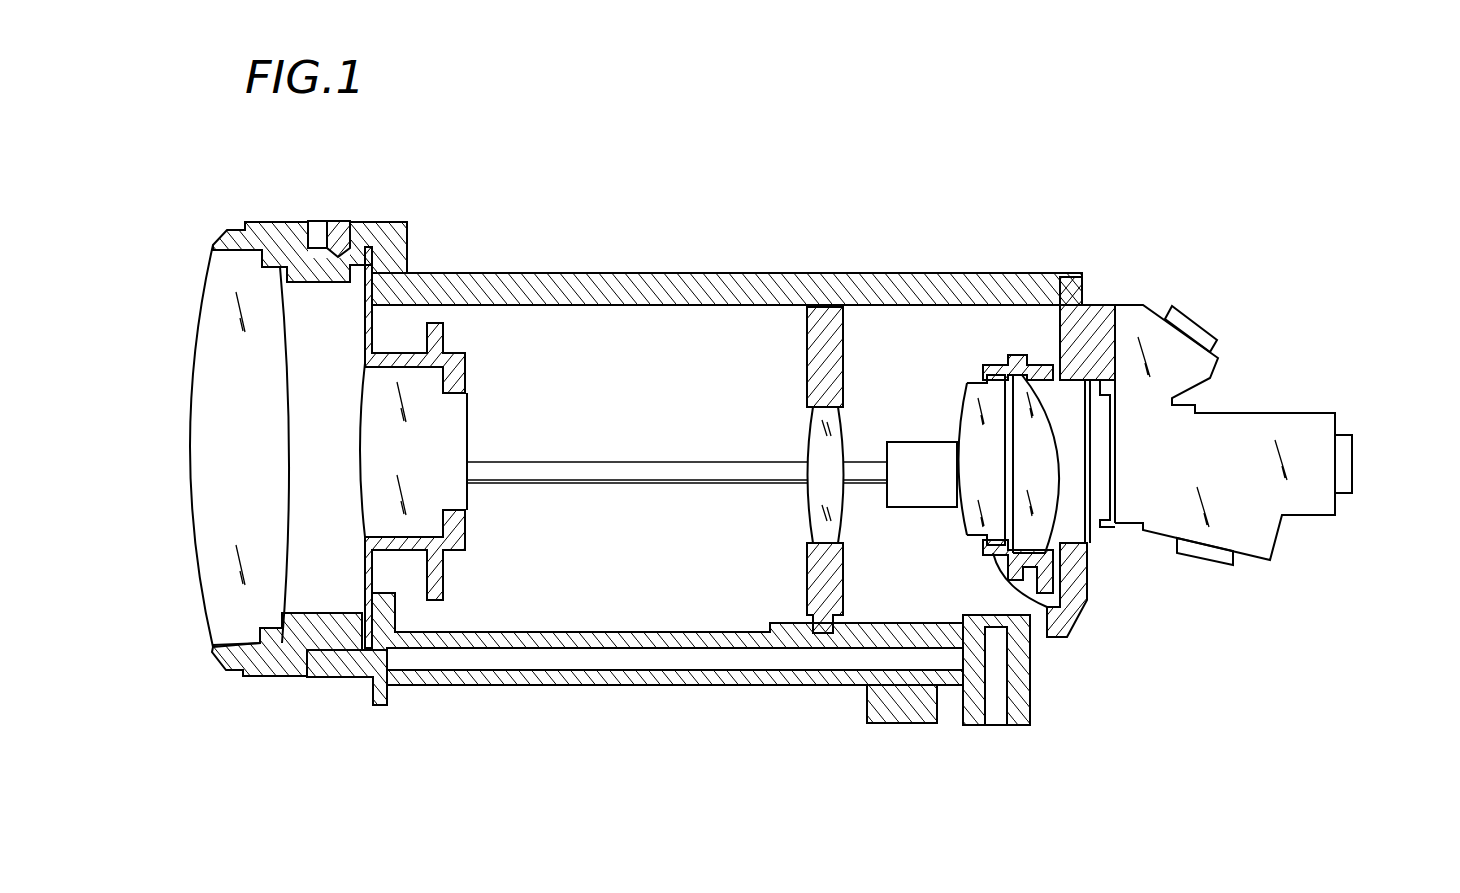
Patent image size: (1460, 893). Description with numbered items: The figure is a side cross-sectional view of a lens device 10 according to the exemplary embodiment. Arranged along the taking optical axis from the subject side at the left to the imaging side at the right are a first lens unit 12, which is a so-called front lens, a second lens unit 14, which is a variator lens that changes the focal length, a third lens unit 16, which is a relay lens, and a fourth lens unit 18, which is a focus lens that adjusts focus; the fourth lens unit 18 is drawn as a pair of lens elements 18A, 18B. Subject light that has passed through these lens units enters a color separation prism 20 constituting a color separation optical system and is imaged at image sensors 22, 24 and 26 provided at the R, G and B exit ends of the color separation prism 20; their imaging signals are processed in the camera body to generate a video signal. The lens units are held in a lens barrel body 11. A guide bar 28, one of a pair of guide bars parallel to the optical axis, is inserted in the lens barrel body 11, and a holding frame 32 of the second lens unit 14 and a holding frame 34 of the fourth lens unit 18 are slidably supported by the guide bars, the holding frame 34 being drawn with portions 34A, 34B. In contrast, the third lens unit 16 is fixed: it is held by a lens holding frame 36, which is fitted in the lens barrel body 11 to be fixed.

The lens device 10 is at (836, 199).
The lens barrel body 11 is at (661, 272).
The first lens unit 12 is at (220, 462).
The second lens unit 14 is at (388, 453).
The third lens unit 16 is at (808, 430).
The fourth lens unit 18 is at (961, 390).
The front lens of fourth lens group 18A is at (958, 472).
The rear lens of fourth lens group 18B is at (1037, 480).
The color separation prism 20 is at (1271, 405).
The image sensor 22 is at (1207, 555).
The image sensor 24 is at (1343, 462).
The image sensor 26 is at (1185, 327).
The guide bar 28 is at (633, 473).
The holding frame 32 is at (465, 370).
The holding frame 34 is at (1007, 350).
The holder flange 34A is at (1058, 637).
The holder ring 34B is at (1037, 362).
The lens holding frame 36 is at (807, 567).